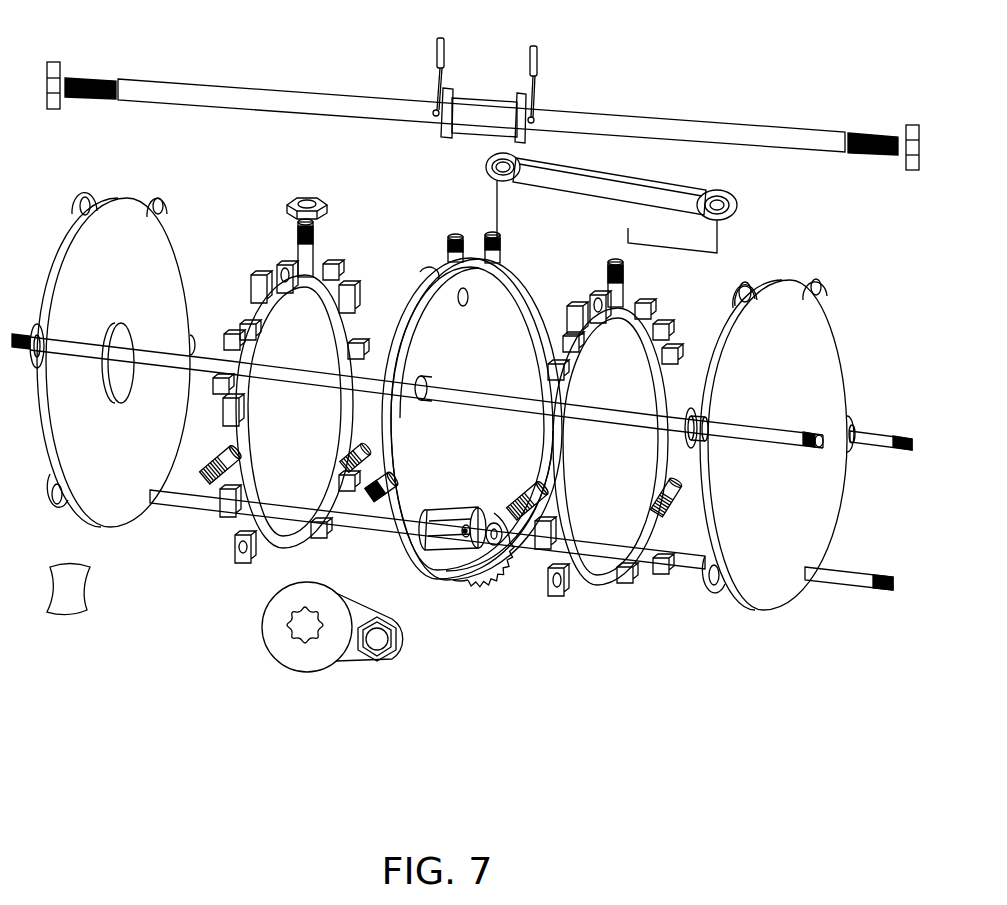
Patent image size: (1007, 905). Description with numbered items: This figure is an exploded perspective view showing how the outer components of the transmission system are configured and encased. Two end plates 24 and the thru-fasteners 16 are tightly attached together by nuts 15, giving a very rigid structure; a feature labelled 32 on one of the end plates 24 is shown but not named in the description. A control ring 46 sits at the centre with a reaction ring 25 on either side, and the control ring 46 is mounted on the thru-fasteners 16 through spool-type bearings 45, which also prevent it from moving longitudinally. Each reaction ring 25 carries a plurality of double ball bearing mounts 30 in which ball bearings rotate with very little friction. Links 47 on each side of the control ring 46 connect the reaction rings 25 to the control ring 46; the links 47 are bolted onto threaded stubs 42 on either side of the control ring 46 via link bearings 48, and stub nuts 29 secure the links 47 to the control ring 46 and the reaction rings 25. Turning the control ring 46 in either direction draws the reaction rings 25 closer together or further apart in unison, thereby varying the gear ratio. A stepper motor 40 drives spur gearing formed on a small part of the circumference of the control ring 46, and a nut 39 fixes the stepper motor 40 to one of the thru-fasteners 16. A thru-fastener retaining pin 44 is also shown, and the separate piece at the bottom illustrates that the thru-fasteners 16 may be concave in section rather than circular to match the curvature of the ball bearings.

The nuts 15 is at (53, 63).
The thru-fasteners 16 is at (705, 130).
The end plates 24 is at (165, 261).
The reaction rings 25 is at (350, 290).
The stub nuts 29 is at (318, 197).
The bearing mounts 30 is at (256, 287).
The mounting lug 32 is at (755, 283).
The nut 39 is at (484, 572).
The stepper motor 40 is at (325, 603).
The threaded stubs 42 is at (489, 236).
The thru-fastener retaining pin 44 is at (540, 55).
The spool-type bearings 45 is at (478, 105).
The control ring 46 is at (412, 553).
The links 47 is at (607, 185).
The link bearings 48 is at (486, 157).